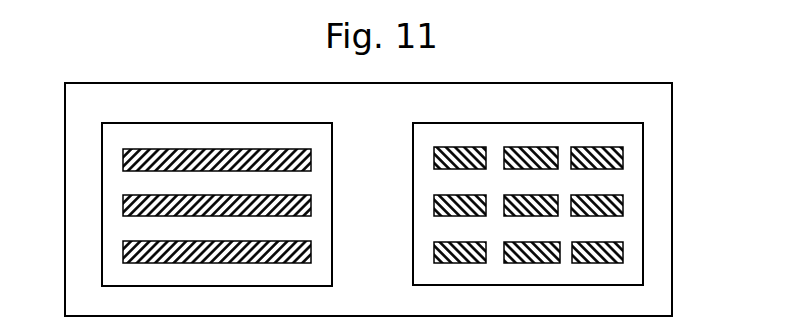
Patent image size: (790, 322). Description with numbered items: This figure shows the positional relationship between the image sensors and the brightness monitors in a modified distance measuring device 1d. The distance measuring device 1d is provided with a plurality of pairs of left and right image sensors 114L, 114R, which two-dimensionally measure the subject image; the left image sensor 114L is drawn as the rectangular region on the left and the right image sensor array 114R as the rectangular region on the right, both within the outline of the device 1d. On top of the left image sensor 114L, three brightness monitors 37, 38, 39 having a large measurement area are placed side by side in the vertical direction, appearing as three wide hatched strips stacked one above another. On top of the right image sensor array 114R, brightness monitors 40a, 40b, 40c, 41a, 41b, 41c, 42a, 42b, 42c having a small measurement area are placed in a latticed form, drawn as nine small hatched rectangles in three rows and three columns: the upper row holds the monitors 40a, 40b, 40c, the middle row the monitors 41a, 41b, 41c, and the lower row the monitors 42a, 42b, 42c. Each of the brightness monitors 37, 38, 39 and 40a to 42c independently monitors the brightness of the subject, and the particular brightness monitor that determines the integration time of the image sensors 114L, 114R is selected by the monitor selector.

The distance measuring device 1d is at (588, 74).
The left image sensor 114L is at (138, 134).
The right image sensor array 114R is at (428, 136).
The brightness monitor 37 is at (311, 161).
The brightness monitor 38 is at (311, 204).
The brightness monitor 39 is at (311, 251).
The brightness monitor 40a is at (461, 147).
The brightness monitor 40b is at (539, 147).
The brightness monitor 40c is at (617, 147).
The brightness monitor 41a is at (458, 195).
The brightness monitor 41b is at (528, 195).
The brightness monitor 41c is at (601, 195).
The brightness monitor 42a is at (458, 242).
The brightness monitor 42b is at (528, 242).
The brightness monitor 42c is at (601, 242).